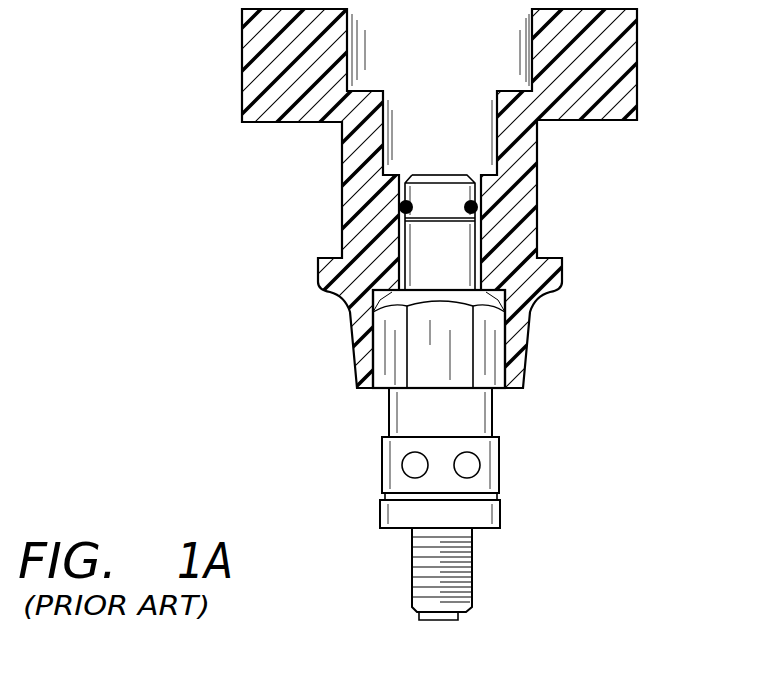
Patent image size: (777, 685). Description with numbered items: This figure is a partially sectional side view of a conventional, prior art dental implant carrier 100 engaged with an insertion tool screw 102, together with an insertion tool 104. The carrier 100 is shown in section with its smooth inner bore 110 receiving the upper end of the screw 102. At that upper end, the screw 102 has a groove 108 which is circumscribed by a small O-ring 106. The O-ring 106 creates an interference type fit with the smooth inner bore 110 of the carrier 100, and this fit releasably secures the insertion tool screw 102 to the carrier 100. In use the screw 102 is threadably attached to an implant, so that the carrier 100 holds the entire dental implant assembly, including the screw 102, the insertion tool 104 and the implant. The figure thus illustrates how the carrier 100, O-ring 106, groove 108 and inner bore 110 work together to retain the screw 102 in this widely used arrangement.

The carrier 100 is at (229, 50).
The screw 102 is at (450, 256).
The insertion tool 104 is at (372, 412).
The O-ring 106 is at (478, 203).
The groove 108 is at (460, 210).
The inner bore 110 is at (398, 262).